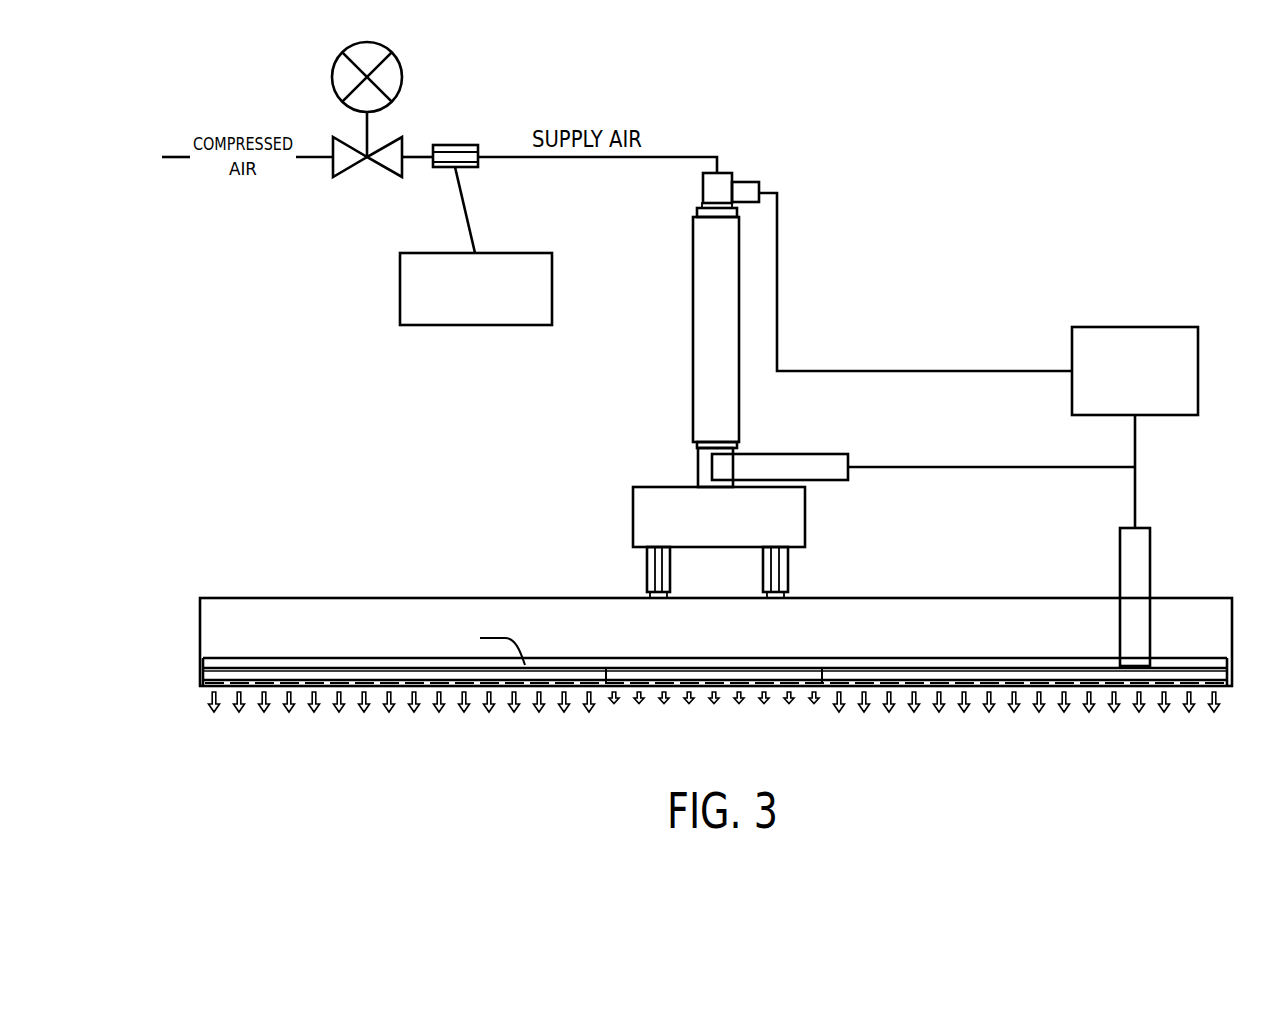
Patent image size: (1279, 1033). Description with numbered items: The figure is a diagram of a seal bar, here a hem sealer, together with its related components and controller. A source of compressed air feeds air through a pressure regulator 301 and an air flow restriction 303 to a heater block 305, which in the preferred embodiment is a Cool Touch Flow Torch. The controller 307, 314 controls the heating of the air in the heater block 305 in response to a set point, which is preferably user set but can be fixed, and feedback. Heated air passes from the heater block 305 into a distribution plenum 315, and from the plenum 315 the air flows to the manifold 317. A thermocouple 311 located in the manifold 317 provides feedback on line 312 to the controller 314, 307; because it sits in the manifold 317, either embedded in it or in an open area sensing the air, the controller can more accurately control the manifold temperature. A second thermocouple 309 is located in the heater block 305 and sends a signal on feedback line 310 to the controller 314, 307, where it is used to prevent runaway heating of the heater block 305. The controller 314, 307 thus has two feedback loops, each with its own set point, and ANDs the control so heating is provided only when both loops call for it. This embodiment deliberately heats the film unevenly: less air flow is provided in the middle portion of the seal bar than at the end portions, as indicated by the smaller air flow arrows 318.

The pressure regulator 301 is at (393, 140).
The air flow restriction 303 is at (468, 165).
The heater block 305 is at (720, 248).
The controller 307 is at (745, 182).
The second thermocouple 309 is at (780, 453).
The feedback line 310 is at (990, 466).
The thermocouple 311 is at (1150, 570).
The line 312 is at (1137, 492).
The controller 314 is at (1137, 327).
The distribution plenum 315 is at (805, 520).
The manifold 317 is at (557, 620).
The air flow arrows 318 is at (703, 707).